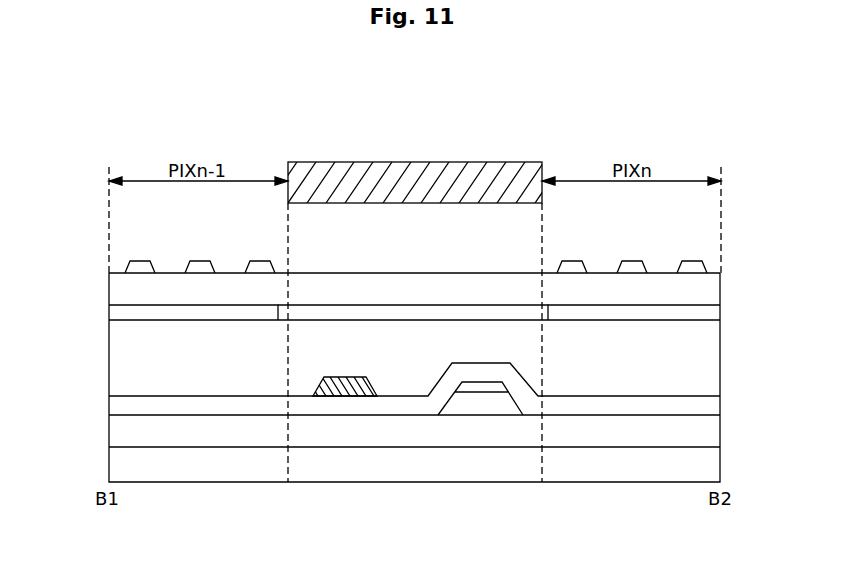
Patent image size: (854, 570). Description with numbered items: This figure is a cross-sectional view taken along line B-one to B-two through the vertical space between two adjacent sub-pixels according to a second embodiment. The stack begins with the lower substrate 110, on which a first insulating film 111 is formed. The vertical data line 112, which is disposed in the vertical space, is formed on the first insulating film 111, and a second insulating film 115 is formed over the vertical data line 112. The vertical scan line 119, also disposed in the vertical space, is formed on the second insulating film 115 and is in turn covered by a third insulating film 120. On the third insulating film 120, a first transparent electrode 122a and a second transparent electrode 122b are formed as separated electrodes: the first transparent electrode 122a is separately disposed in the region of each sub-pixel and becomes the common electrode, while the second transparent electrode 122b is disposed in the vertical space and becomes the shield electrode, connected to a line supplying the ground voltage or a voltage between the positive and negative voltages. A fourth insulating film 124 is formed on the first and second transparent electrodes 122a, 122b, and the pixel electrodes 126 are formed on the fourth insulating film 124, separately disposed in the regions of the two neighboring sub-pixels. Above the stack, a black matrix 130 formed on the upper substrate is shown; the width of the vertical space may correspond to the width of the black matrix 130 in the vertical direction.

The black matrix 130 is at (412, 172).
The pixel electrodes 126 is at (695, 268).
The fourth insulating film 124 is at (712, 286).
The first transparent electrode 122a is at (712, 313).
The second transparent electrode 122b is at (322, 313).
The third insulating film 120 is at (712, 355).
The second insulating film 115 is at (712, 402).
The first insulating film 111 is at (712, 428).
The lower substrate 110 is at (712, 459).
The vertical scan line 119 is at (342, 388).
The vertical data line 112 is at (477, 407).